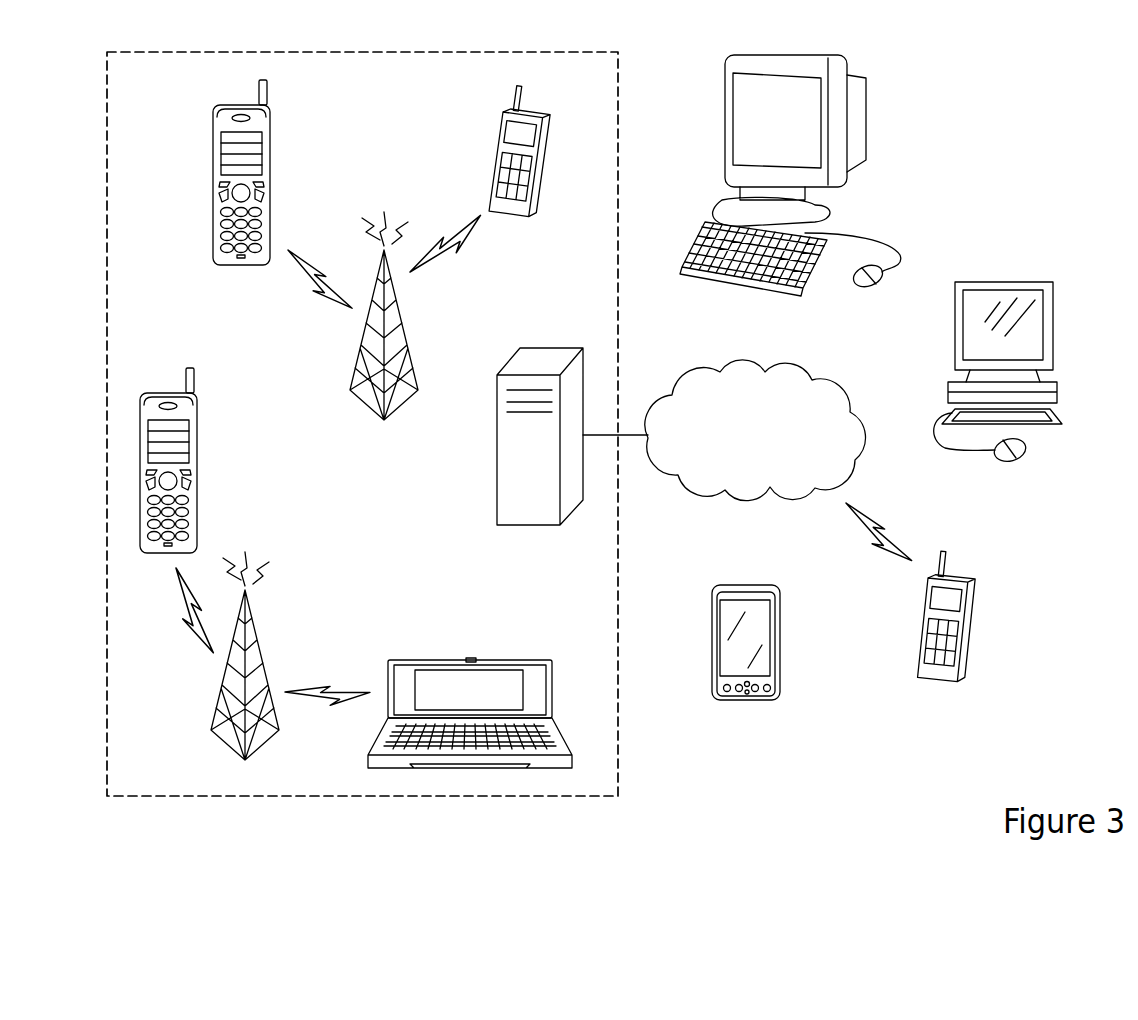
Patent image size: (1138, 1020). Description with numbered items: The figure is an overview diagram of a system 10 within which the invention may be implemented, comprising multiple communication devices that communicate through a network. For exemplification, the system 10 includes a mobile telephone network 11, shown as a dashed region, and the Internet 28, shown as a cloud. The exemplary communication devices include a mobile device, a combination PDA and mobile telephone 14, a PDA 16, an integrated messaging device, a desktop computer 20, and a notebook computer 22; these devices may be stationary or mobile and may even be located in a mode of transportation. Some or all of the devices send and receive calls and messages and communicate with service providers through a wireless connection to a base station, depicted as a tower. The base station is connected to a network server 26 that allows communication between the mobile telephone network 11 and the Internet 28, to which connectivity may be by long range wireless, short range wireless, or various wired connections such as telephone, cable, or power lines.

The system 10 is at (1046, 530).
The mobile telephone network 11 is at (145, 94).
The combination PDA and mobile telephone 14 is at (470, 660).
The PDA 16 is at (782, 640).
The desktop computer 20 is at (867, 108).
The notebook computer 22 is at (1003, 280).
The network server 26 is at (497, 450).
The Internet 28 is at (790, 365).